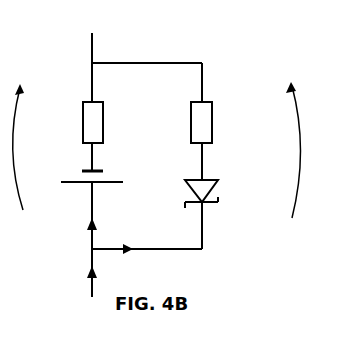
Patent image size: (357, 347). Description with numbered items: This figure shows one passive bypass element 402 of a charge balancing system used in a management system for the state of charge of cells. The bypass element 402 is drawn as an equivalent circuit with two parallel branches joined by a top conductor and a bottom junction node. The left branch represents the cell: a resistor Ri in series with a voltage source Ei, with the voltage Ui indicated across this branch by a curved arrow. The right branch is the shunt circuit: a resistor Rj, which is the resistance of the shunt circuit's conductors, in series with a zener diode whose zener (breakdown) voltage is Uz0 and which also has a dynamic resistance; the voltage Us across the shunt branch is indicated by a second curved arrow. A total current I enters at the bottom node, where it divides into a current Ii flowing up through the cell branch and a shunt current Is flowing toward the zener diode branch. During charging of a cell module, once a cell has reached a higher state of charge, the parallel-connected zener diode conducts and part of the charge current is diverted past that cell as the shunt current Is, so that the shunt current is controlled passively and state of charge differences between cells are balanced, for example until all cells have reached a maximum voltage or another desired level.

The passive bypass element 402 is at (70, 39).
The internal resistance Ri is at (77, 122).
The resistance of the shunt circuit's conductors Rj is at (215, 122).
The voltage source Ei is at (79, 179).
The zener voltage Uz0 is at (227, 194).
The current Ii is at (80, 231).
The current I is at (79, 276).
The current Is is at (131, 237).
The voltage Ui is at (27, 135).
The voltage Us is at (279, 139).